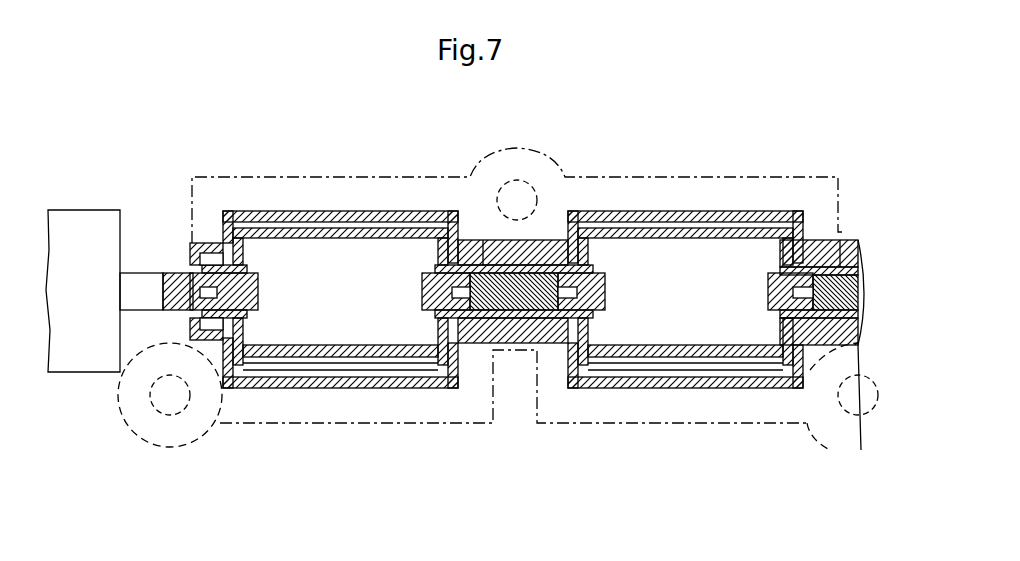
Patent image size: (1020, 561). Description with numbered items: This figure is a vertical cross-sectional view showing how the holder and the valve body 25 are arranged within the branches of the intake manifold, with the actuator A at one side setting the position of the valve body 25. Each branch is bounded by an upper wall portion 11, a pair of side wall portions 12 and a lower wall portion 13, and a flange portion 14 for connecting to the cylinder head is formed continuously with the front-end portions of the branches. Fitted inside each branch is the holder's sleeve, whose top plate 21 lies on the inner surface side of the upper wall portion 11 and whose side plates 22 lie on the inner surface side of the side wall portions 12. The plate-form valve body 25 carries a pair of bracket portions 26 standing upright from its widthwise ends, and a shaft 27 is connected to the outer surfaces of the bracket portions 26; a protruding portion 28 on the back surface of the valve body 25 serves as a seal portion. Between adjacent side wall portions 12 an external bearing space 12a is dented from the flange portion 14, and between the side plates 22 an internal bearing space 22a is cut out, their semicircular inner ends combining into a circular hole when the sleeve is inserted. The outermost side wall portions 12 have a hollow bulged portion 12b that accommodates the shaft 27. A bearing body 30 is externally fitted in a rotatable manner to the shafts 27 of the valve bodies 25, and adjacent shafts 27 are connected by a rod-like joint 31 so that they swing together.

The actuator A is at (98, 230).
The upper wall portion 11 is at (330, 214).
The side wall portion 12 is at (230, 360).
The external bearing space 12a is at (517, 200).
The hollow bulged portion 12b is at (200, 250).
The lower wall portion 13 is at (352, 388).
The flange portion 14 is at (400, 177).
The top plate 21 is at (280, 227).
The side plate 22 is at (250, 388).
The internal bearing space 22a is at (422, 287).
The valve body 25 is at (320, 388).
The bracket portion 26 is at (255, 320).
The shaft 27 is at (215, 268).
The protruding portion 28 is at (378, 388).
The bearing body 30 is at (483, 268).
The joint 31 is at (776, 270).